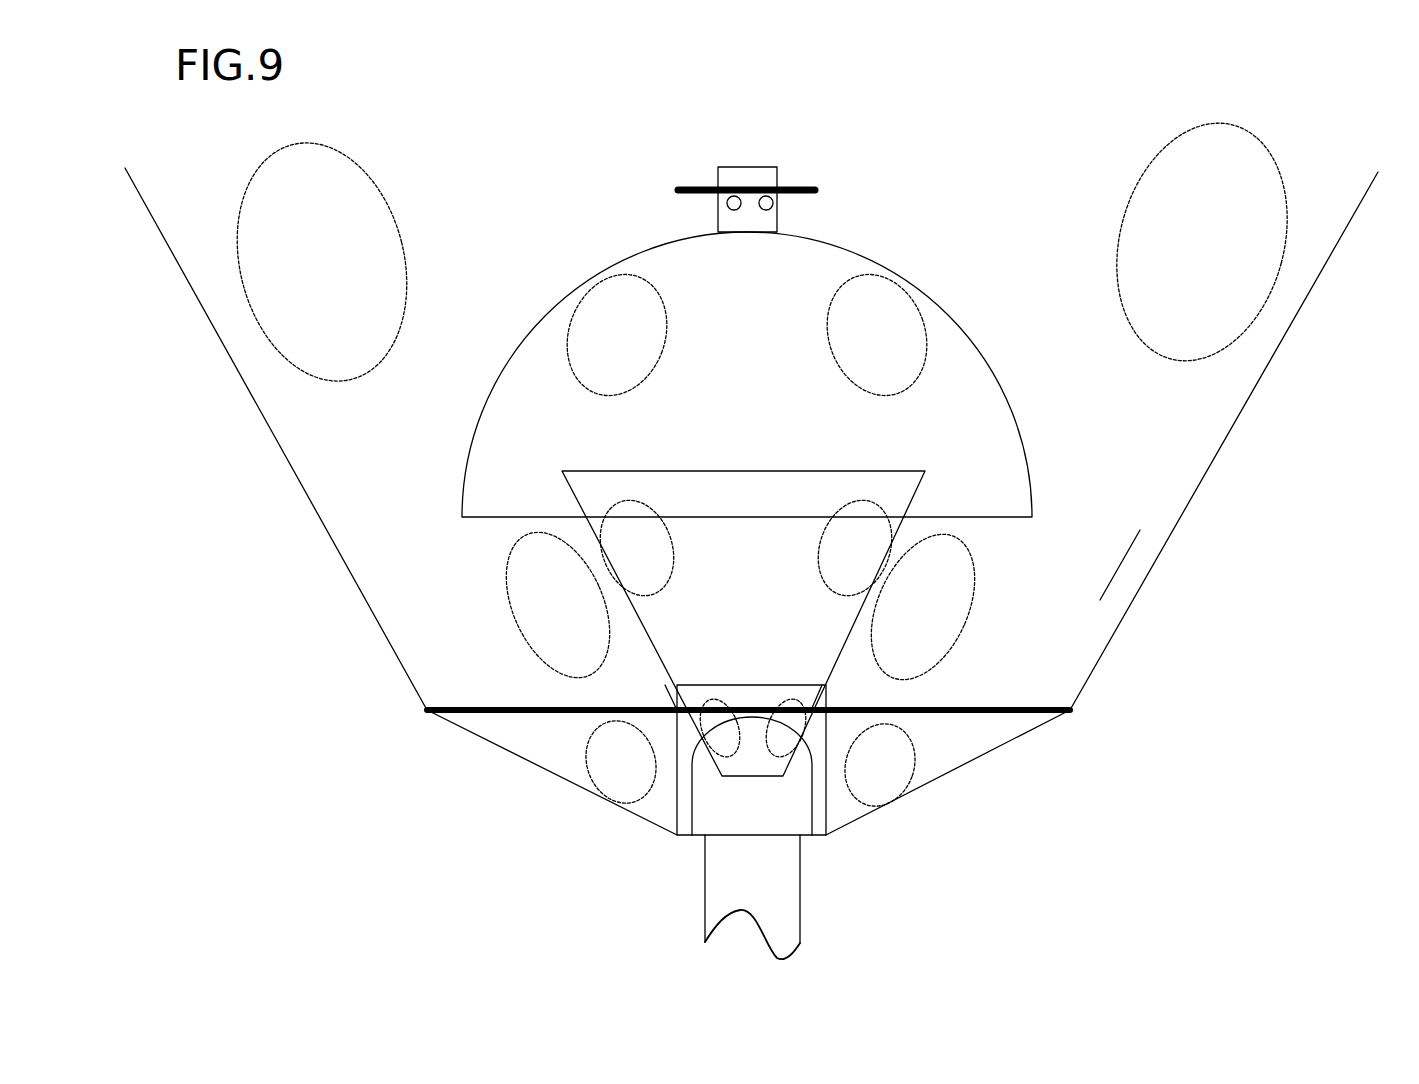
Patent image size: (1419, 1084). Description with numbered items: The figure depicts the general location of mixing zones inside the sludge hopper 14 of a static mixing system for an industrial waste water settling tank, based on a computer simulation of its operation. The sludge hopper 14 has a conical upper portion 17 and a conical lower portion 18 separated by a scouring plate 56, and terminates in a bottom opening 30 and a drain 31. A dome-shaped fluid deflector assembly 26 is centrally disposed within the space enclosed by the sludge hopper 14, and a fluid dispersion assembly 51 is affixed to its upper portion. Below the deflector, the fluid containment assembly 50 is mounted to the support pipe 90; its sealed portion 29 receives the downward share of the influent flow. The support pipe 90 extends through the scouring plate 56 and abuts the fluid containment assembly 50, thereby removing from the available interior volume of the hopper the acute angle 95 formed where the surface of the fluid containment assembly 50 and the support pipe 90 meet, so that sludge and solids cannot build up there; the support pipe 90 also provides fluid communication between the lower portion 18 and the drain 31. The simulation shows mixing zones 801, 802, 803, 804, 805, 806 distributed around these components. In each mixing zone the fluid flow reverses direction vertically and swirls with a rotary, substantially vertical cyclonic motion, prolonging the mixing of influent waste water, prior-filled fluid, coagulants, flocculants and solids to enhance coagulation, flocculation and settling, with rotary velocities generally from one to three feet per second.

The sludge hopper 14 is at (1187, 508).
The upper portion 17 is at (1120, 560).
The lower portion 18 is at (1003, 730).
The fluid deflector assembly 26 is at (1025, 460).
The sealed portion 29 is at (757, 777).
The bottom opening 30 is at (747, 836).
The drain 31 is at (705, 918).
The fluid containment assembly 50 is at (900, 528).
The fluid dispersion assembly 51 is at (797, 223).
The scouring plate 56 is at (1070, 708).
The support pipe 90 is at (667, 831).
The acute angle 95 is at (683, 707).
The mixing zone 801 is at (240, 198).
The mixing zone 802 is at (829, 314).
The flow region 803 is at (527, 620).
The mixing zone 804 is at (826, 537).
The mixing zone 805 is at (806, 706).
The mixing zone 806 is at (600, 785).